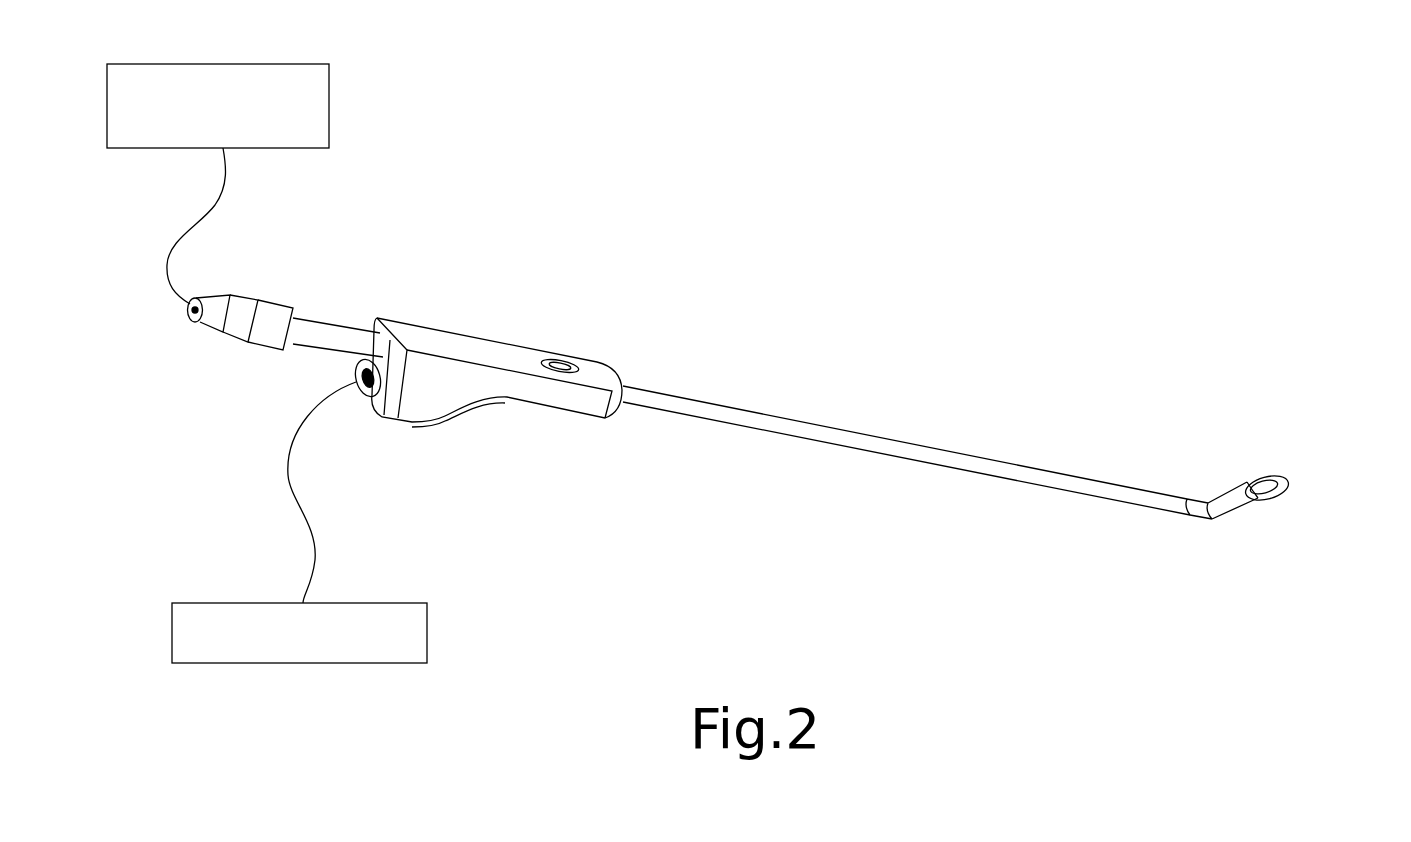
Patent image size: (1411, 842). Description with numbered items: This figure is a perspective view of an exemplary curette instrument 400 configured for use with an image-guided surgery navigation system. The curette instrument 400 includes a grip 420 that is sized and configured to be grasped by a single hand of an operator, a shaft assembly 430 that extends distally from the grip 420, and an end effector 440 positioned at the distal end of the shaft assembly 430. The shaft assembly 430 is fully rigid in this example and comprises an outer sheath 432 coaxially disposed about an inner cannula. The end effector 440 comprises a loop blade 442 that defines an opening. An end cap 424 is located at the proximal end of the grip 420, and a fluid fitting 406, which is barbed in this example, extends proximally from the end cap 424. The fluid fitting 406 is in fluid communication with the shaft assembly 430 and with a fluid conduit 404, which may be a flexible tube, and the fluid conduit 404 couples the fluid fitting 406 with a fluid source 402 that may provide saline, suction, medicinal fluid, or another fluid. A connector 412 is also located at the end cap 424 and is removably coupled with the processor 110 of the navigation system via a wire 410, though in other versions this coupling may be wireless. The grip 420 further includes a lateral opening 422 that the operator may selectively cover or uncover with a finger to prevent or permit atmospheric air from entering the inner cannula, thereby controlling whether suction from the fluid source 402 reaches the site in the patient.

The curette instrument 400 is at (1038, 115).
The fluid source 402 is at (329, 101).
The fluid conduit 404 is at (227, 197).
The fluid fitting 406 is at (312, 323).
The wire 410 is at (315, 542).
The connector 412 is at (354, 418).
The grip 420 is at (520, 338).
The lateral opening 422 is at (567, 345).
The end cap 424 is at (392, 390).
The shaft assembly 430 is at (906, 426).
The outer sheath 432 is at (935, 462).
The end effector 440 is at (1278, 473).
The loop blade 442 is at (1283, 498).
The processor 110 is at (427, 633).